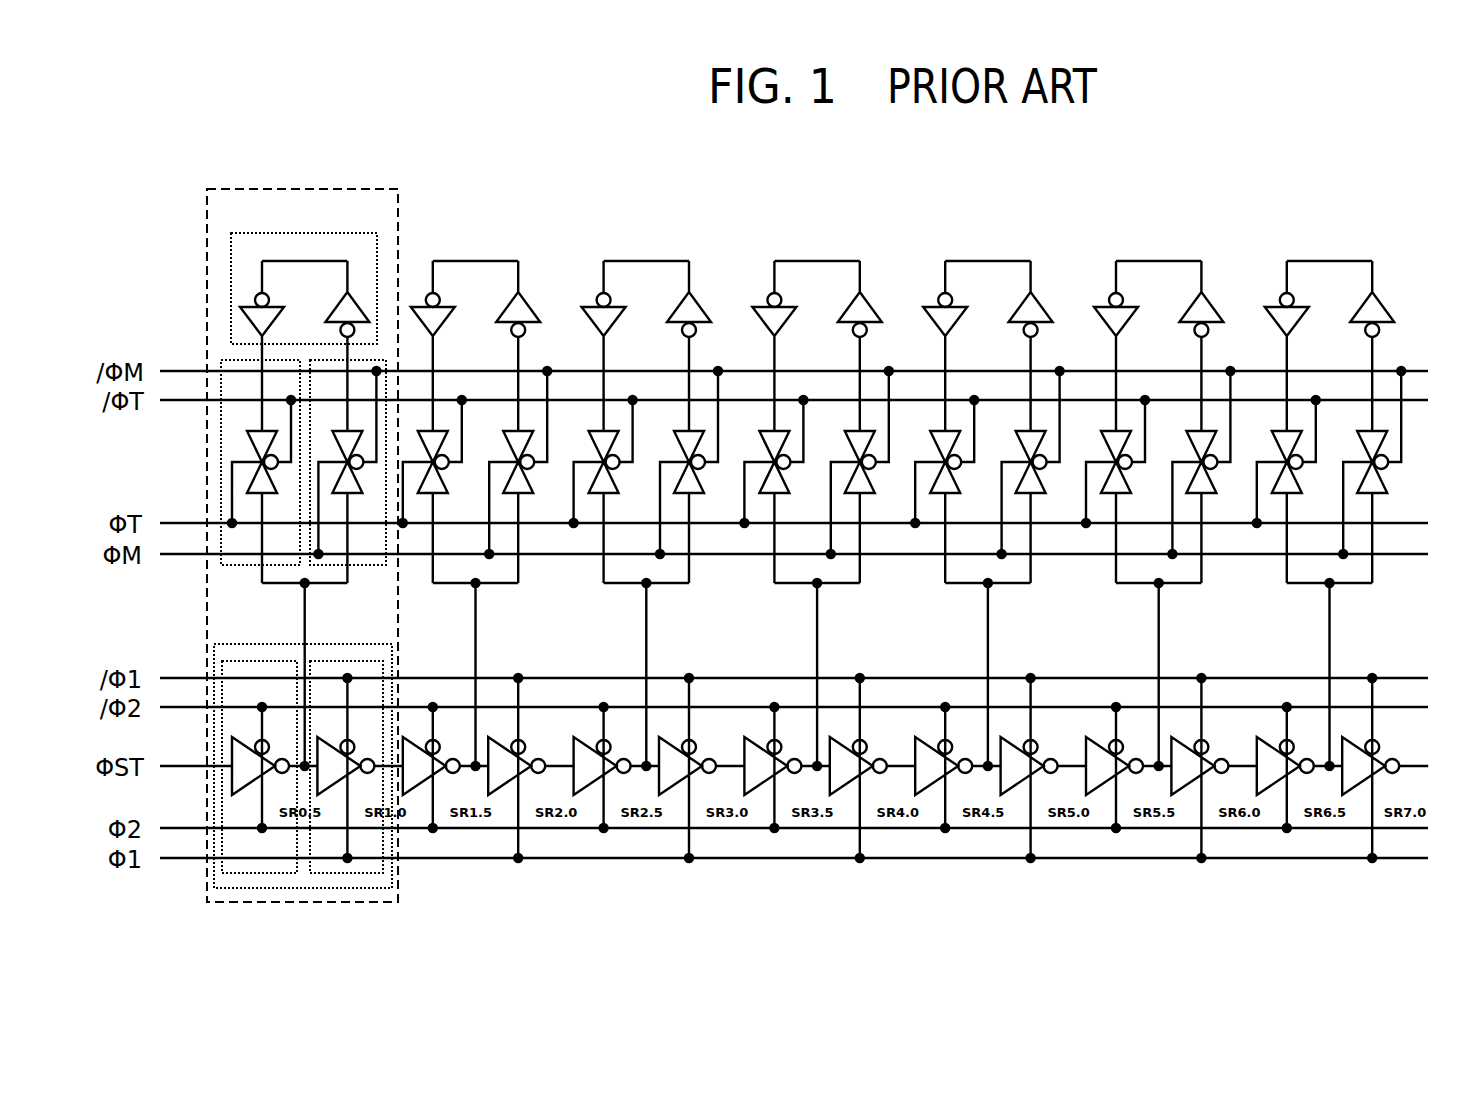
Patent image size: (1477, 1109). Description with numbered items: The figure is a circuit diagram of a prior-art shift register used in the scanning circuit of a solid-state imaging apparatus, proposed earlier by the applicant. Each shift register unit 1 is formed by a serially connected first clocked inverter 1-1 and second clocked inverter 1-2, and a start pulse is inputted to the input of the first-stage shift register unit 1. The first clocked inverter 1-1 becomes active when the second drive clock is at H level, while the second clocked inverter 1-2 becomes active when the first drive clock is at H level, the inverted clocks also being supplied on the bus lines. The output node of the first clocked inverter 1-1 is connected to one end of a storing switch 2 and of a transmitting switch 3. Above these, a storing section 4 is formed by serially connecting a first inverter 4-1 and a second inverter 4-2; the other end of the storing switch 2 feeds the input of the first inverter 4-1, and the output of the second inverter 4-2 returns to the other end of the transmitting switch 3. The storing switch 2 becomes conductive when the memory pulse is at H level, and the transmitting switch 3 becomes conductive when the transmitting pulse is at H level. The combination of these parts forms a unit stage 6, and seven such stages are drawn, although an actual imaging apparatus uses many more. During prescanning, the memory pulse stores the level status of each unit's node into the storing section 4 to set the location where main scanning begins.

The shift register unit 1 is at (220, 645).
The first clocked inverter 1-1 is at (265, 660).
The second clocked inverter 1-2 is at (357, 660).
The storing switch 2 is at (373, 358).
The transmitting switch 3 is at (227, 358).
The storing section 4 is at (265, 232).
The first inverter 4-1 is at (332, 317).
The second inverter 4-2 is at (250, 306).
The unit stage 6 is at (240, 188).